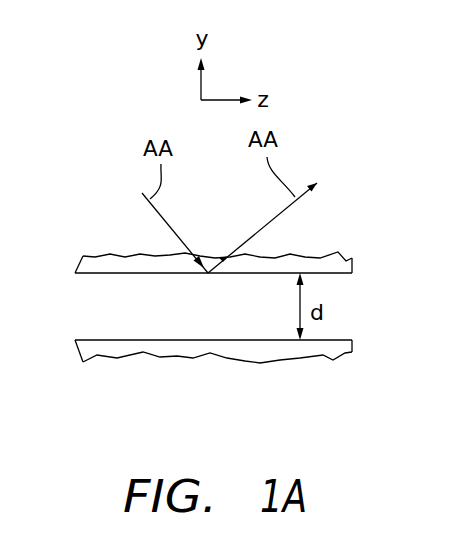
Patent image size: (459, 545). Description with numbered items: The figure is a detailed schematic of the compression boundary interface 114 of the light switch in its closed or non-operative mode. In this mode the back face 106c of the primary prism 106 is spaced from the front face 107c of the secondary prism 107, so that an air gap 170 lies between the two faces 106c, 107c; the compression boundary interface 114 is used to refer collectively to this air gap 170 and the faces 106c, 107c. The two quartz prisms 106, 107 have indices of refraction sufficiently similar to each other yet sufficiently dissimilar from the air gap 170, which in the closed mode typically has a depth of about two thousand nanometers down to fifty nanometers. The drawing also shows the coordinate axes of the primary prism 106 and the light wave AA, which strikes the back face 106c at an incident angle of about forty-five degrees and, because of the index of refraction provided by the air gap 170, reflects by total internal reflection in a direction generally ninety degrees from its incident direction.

The primary prism 106 is at (232, 241).
The back face of the primary prism 106c is at (138, 274).
The secondary prism 107 is at (239, 377).
The front face of the secondary prism 107c is at (183, 340).
The compression boundary interface 114 is at (73, 273).
The air gap 170 is at (192, 325).